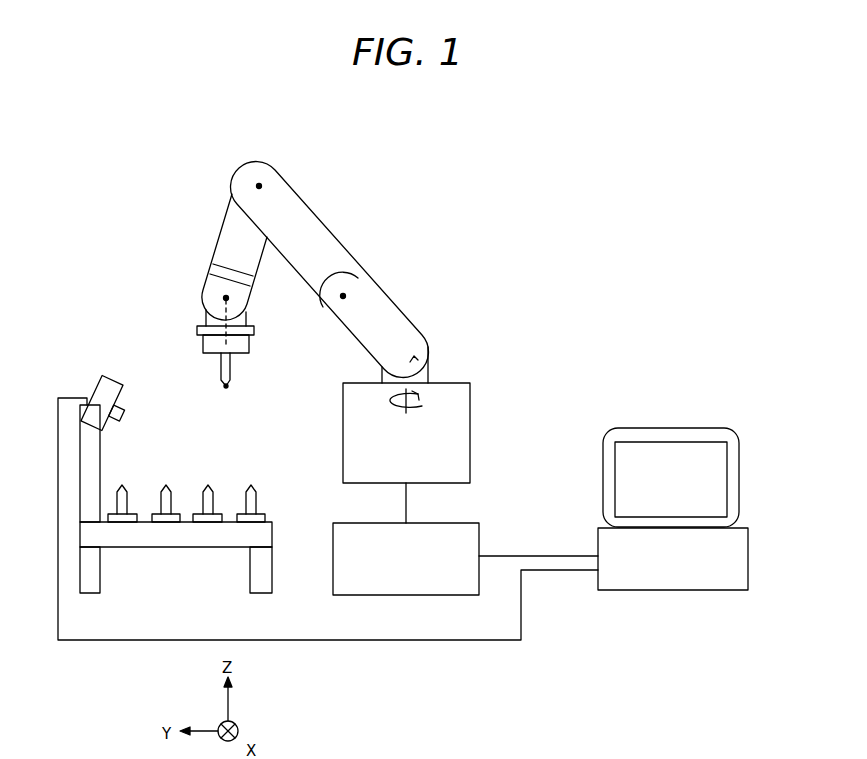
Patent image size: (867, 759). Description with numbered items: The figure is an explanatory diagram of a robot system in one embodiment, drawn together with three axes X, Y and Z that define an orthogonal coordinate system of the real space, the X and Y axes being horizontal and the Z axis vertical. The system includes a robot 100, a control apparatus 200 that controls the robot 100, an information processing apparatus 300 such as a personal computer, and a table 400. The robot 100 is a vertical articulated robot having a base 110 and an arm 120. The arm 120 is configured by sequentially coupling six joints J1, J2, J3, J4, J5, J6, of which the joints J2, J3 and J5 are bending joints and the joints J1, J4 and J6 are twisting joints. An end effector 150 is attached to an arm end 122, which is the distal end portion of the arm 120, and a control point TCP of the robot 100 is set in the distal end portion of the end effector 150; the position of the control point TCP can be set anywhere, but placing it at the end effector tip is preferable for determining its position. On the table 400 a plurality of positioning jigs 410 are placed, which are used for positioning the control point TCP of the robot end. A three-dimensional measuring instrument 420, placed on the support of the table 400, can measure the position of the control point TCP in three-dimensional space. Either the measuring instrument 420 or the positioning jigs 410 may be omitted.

The robot 100 is at (350, 113).
The base 110 is at (472, 415).
The arm 120 is at (323, 233).
The arm end 122 is at (254, 330).
The end effector 150 is at (240, 365).
The control point TCP is at (221, 384).
The joint J1 is at (414, 356).
The joint J2 is at (348, 294).
The joint J3 is at (262, 185).
The joint J4 is at (208, 268).
The joint J5 is at (223, 297).
The joint J6 is at (210, 306).
The control apparatus 200 is at (479, 523).
The information processing apparatus 300 is at (712, 428).
The table 400 is at (170, 548).
The positioning jigs 410 is at (213, 502).
The three-dimensional measuring instrument 420 is at (93, 384).